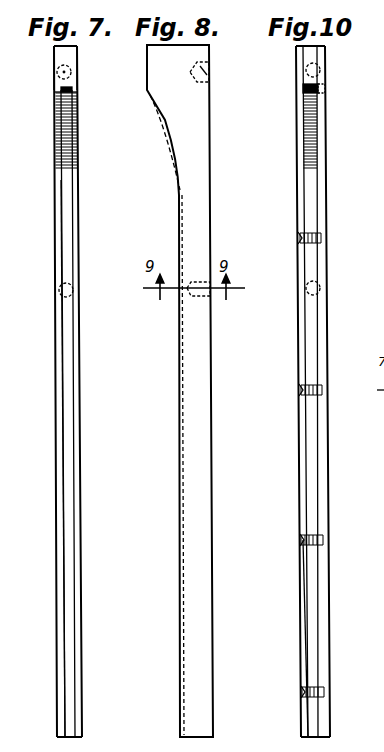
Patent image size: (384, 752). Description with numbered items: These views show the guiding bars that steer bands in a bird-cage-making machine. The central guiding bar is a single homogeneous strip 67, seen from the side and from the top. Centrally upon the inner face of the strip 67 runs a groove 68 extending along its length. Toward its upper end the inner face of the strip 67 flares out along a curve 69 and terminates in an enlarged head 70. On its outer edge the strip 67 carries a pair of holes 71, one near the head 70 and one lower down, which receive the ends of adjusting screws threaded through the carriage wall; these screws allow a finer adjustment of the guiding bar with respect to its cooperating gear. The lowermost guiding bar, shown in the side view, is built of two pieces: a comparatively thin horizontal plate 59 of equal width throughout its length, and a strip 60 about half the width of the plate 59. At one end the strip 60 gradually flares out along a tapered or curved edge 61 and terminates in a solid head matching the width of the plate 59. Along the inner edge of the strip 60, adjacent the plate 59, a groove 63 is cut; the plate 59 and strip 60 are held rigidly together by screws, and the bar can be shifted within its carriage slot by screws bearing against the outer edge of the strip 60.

In FIG. 10, the horizontal plate 59 is at (300, 560).
In FIG. 10, the strip 60 is at (330, 630).
In FIG. 10, the tapered or curved edge 61 is at (343, 136).
In FIG. 10, the groove 63 is at (314, 477).
In FIG. 7, the homogeneous strip 67 is at (73, 486).
In FIG. 8, the homogeneous strip 67 is at (191, 410).
In FIG. 7, the groove 68 is at (70, 254).
In FIG. 7, the curve 69 is at (56, 128).
In FIG. 8, the curve 69 is at (165, 128).
In FIG. 7, the head 70 is at (76, 62).
In FIG. 8, the head 70 is at (155, 70).
In FIG. 7, the holes 71 is at (72, 78).
In FIG. 8, the holes 71 is at (210, 74).